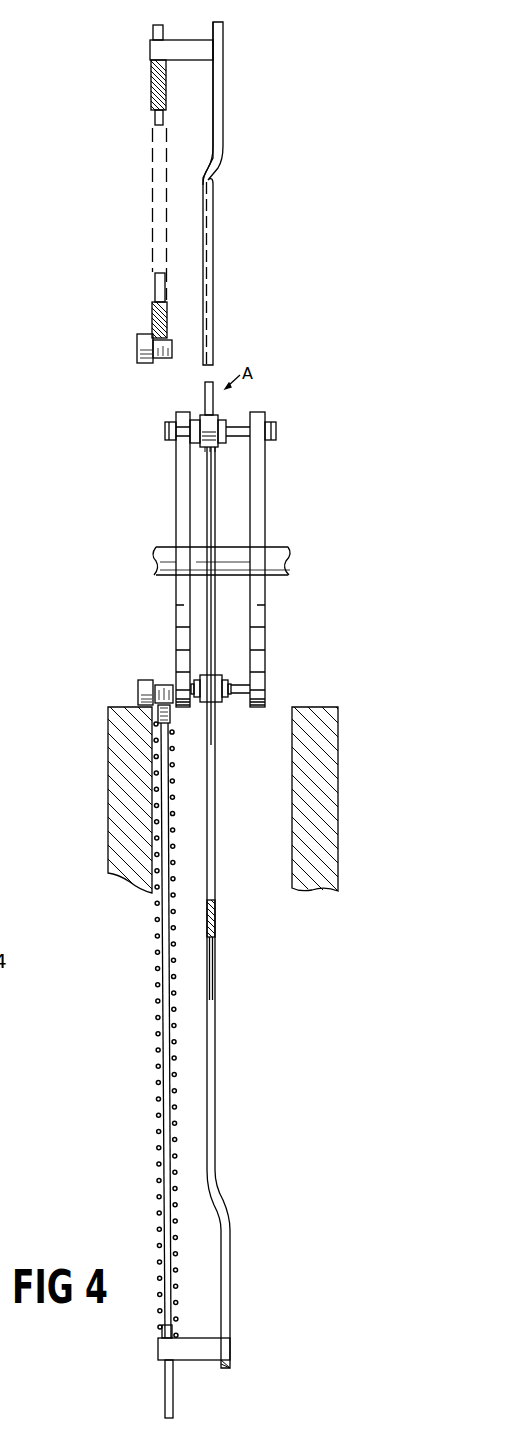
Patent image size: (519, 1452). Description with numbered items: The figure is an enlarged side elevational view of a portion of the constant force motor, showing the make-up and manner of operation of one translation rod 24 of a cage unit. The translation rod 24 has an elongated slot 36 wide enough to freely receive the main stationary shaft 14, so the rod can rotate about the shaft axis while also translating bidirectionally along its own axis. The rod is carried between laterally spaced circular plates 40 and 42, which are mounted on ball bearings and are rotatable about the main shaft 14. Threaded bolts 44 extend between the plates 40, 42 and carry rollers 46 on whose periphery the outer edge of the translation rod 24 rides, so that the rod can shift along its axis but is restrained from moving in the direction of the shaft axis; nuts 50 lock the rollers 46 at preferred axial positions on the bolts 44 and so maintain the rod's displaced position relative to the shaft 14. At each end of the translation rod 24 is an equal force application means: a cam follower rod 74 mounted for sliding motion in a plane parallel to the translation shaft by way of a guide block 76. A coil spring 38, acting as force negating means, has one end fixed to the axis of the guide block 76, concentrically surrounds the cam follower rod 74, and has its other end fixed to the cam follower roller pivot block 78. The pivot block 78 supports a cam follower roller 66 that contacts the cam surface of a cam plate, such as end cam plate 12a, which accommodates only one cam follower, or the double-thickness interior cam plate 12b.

The end cam plate 12a is at (122, 870).
The cam plate 12b is at (336, 890).
The main stationary shaft 14 is at (272, 562).
The translation rod 24 is at (213, 928).
The elongated slot 36 is at (211, 788).
The coil spring 38 is at (152, 325).
The circular plate 40 is at (178, 528).
The circular plate 42 is at (262, 488).
The threaded bolt 44 is at (236, 427).
The roller 46 is at (212, 420).
The nut 50 is at (205, 449).
The cam follower roller 66 is at (140, 362).
The cam follower rod 74 is at (152, 33).
The guide block 76 is at (160, 50).
The cam follower roller pivot block 78 is at (160, 358).